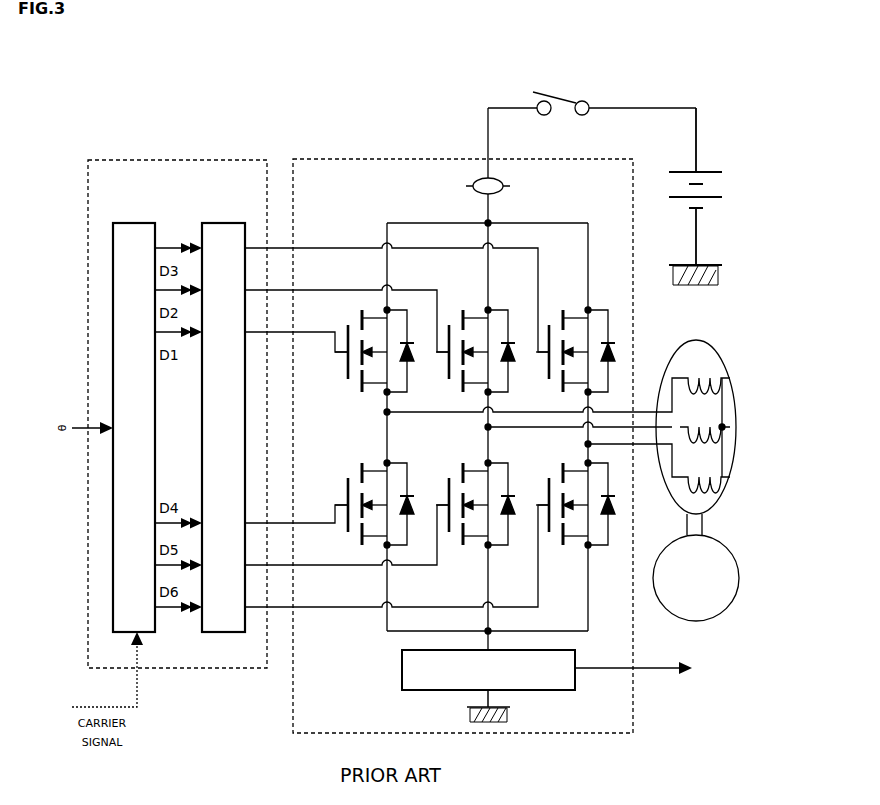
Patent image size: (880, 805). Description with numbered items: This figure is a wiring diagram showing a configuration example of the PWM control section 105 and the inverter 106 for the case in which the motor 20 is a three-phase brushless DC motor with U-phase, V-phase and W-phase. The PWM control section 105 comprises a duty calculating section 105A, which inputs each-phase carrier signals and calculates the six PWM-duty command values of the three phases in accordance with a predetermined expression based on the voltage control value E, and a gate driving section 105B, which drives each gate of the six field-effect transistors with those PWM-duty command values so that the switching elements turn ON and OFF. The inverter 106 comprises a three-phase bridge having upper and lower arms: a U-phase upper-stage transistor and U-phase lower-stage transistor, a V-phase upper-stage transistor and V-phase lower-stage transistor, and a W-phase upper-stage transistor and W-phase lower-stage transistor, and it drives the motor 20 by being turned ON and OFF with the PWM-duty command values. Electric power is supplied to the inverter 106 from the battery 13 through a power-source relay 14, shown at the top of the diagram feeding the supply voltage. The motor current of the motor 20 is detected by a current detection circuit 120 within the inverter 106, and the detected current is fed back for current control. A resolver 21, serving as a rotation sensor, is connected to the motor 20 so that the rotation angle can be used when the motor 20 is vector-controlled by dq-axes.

The battery 13 is at (710, 171).
The power-source relay 14 is at (572, 96).
The motor 20 is at (710, 342).
The resolver 21 is at (715, 551).
The PWM control section 105 is at (254, 157).
The duty calculating section 105A is at (150, 211).
The gate driving section 105B is at (240, 211).
The inverter 106 is at (610, 157).
The current detection circuit 120 is at (578, 663).